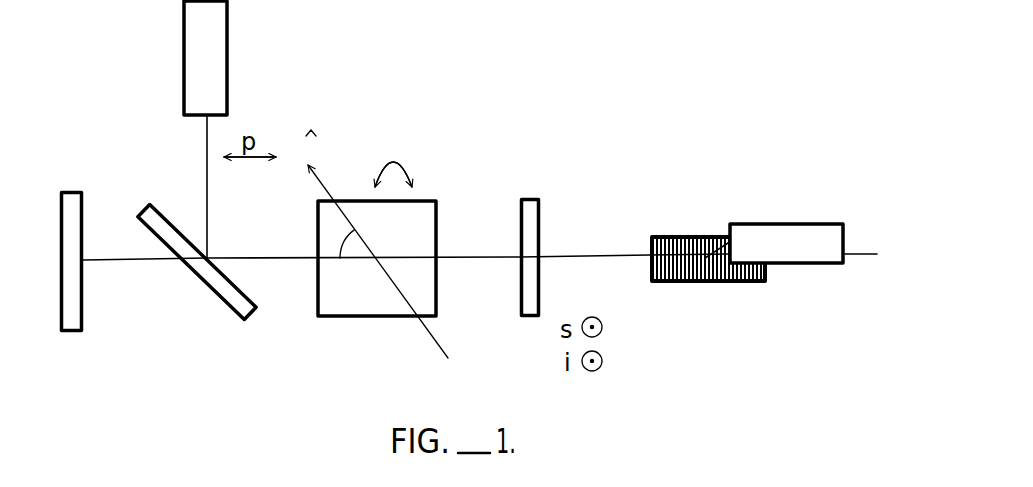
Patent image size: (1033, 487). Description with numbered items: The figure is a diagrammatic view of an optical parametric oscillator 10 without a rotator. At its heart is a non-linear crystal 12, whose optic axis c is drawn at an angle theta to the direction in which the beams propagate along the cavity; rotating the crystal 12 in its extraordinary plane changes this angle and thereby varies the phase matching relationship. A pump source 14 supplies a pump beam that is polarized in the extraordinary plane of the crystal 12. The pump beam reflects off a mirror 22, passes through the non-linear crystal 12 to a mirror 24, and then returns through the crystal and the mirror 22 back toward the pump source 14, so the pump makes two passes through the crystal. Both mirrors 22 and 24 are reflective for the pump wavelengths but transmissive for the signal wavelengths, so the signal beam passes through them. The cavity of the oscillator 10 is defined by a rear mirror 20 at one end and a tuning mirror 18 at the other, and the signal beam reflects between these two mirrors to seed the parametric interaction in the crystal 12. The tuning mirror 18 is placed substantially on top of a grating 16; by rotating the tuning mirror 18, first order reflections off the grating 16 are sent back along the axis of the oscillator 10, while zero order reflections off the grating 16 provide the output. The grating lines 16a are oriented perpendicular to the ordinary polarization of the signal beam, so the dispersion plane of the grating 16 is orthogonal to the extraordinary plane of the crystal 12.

The optical parametric oscillator 10 is at (562, 72).
The non-linear crystal 12 is at (387, 313).
The pump source 14 is at (218, 33).
The grating 16 is at (726, 307).
The grating lines 16a is at (660, 285).
The tuning mirror 18 is at (775, 228).
The rear mirror 20 is at (73, 323).
The mirror 22 is at (240, 319).
The mirror 24 is at (528, 317).